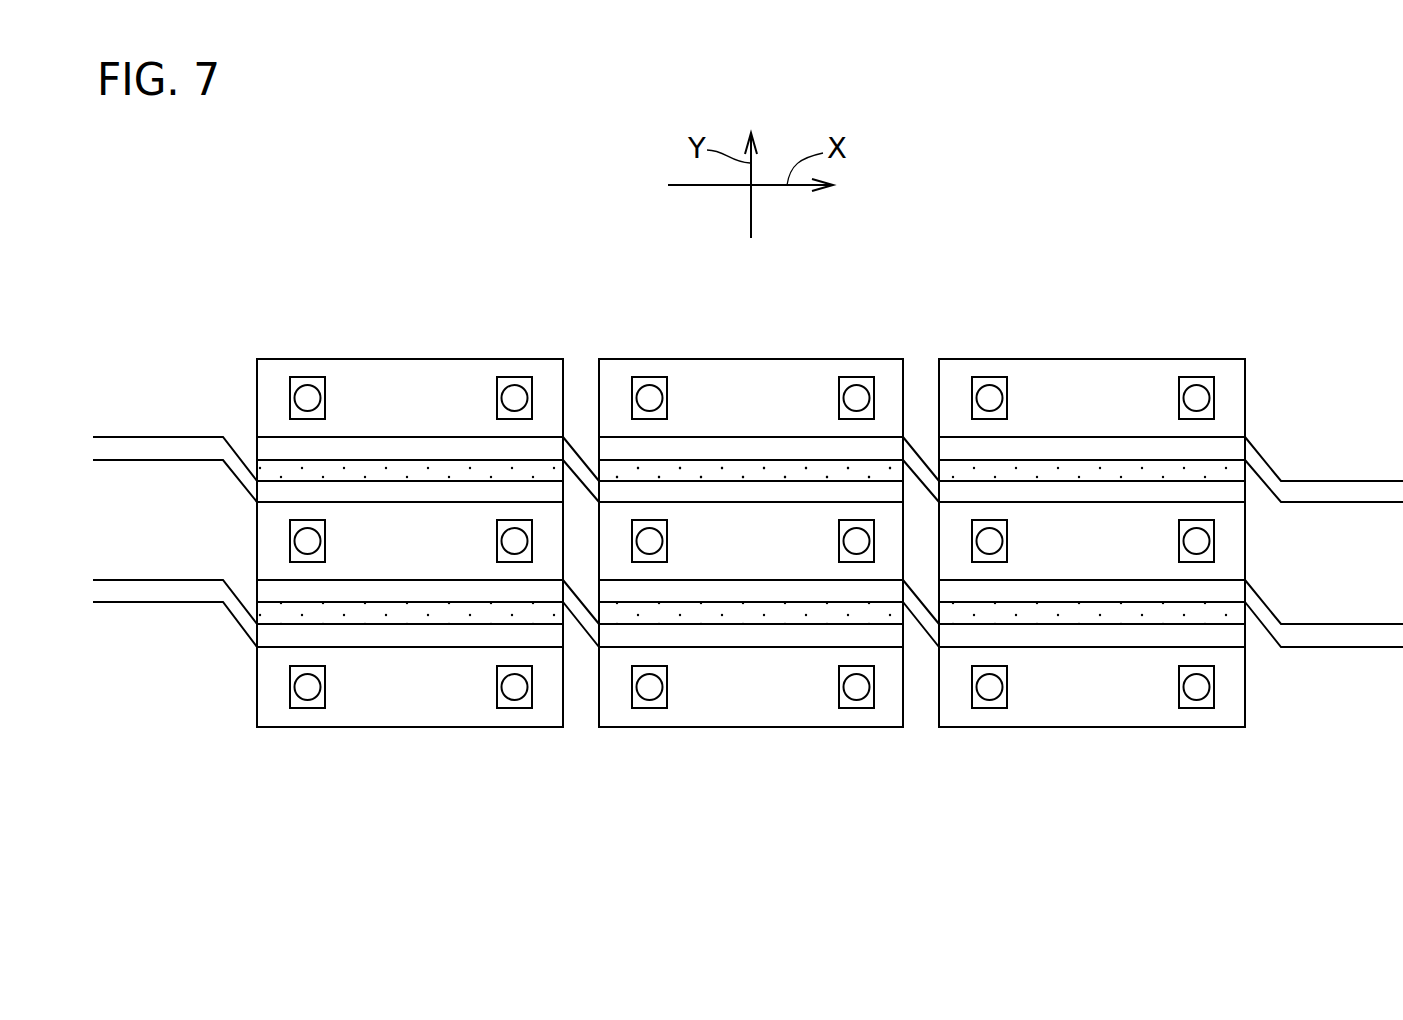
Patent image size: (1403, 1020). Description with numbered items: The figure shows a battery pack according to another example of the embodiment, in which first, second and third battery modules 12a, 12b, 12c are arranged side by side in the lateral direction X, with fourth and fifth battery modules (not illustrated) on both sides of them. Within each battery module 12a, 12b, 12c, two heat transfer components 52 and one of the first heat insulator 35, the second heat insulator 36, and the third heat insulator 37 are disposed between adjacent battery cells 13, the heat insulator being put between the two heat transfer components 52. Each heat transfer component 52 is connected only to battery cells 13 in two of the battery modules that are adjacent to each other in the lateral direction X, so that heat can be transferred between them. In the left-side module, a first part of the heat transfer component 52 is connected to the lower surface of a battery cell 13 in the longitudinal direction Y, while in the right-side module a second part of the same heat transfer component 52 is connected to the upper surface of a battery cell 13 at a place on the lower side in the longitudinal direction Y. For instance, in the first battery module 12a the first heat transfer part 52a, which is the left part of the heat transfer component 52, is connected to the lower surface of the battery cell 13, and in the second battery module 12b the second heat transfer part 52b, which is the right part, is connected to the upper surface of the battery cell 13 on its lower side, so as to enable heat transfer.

The first battery module 12a is at (394, 358).
The second battery module 12b is at (758, 358).
The third battery module 12c is at (1100, 356).
The battery cell 13 is at (441, 383).
The heat transfer component 52 is at (354, 450).
The first heat transfer part 52a is at (512, 450).
The second heat transfer part 52b is at (703, 468).
The first heat insulator 35 is at (461, 476).
The second heat insulator 36 is at (752, 470).
The third heat insulator 37 is at (1092, 468).